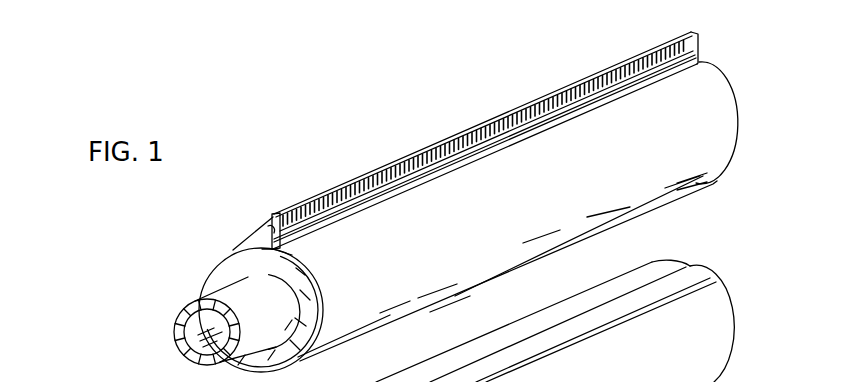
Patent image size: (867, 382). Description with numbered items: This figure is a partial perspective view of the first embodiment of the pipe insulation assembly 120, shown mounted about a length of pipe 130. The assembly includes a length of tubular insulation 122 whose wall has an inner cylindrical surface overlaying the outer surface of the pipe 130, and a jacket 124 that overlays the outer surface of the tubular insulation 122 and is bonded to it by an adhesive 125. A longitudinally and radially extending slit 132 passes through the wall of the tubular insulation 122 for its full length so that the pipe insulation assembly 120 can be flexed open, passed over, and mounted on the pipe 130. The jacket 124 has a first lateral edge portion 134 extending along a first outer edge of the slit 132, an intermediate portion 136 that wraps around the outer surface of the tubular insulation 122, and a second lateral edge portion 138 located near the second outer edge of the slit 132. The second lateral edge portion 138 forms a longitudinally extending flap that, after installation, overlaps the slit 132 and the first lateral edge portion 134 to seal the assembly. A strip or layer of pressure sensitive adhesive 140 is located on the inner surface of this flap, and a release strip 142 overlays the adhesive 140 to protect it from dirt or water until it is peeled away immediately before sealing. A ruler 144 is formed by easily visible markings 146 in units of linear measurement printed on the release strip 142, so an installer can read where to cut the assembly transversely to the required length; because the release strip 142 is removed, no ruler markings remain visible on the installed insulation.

The pipe insulation assembly 120 is at (322, 124).
The tubular insulation 122 is at (228, 266).
The jacket 124 is at (516, 237).
The adhesive 125 is at (300, 361).
The pipe 130 is at (173, 340).
The slit 132 is at (281, 254).
The first lateral edge portion 134 is at (490, 168).
The intermediate portion 136 is at (458, 296).
The second lateral edge portion 138 is at (270, 230).
The adhesive strip 140 is at (273, 222).
The release strip 142 is at (433, 143).
The ruler 144 is at (530, 100).
The markings 146 is at (626, 60).